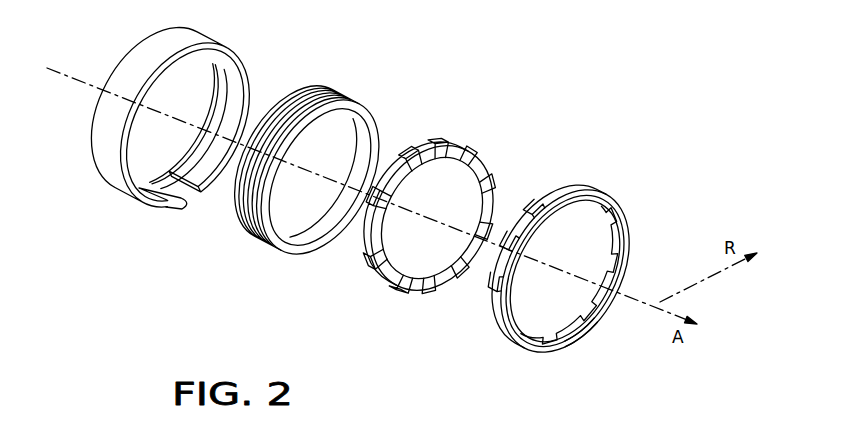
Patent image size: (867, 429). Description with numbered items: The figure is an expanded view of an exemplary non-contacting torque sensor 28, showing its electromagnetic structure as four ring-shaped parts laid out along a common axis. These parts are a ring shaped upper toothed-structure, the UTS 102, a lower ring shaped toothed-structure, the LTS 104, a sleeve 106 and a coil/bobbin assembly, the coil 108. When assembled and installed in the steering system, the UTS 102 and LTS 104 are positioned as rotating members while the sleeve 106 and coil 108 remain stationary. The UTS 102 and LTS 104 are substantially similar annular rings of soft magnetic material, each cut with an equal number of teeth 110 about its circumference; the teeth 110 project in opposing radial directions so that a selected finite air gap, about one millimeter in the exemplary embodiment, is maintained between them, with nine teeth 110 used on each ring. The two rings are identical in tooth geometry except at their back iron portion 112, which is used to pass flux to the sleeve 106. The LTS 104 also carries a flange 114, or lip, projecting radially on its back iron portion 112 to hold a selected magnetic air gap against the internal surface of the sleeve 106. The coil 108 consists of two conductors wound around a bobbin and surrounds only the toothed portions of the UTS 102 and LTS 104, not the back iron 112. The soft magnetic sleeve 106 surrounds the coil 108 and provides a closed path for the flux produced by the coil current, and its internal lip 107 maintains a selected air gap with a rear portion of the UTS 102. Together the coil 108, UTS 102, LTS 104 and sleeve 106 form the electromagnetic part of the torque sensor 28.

The torque sensor 28 is at (186, 245).
The upper toothed-structure (UTS) 102 is at (483, 162).
The lower toothed-structure (LTS) 104 is at (603, 258).
The sleeve 106 is at (232, 45).
The internal lip 107 is at (212, 78).
The coil/bobbin assembly 108 is at (358, 100).
The teeth 110 is at (445, 283).
The back iron portion 112 is at (377, 268).
The flange 114 is at (510, 333).